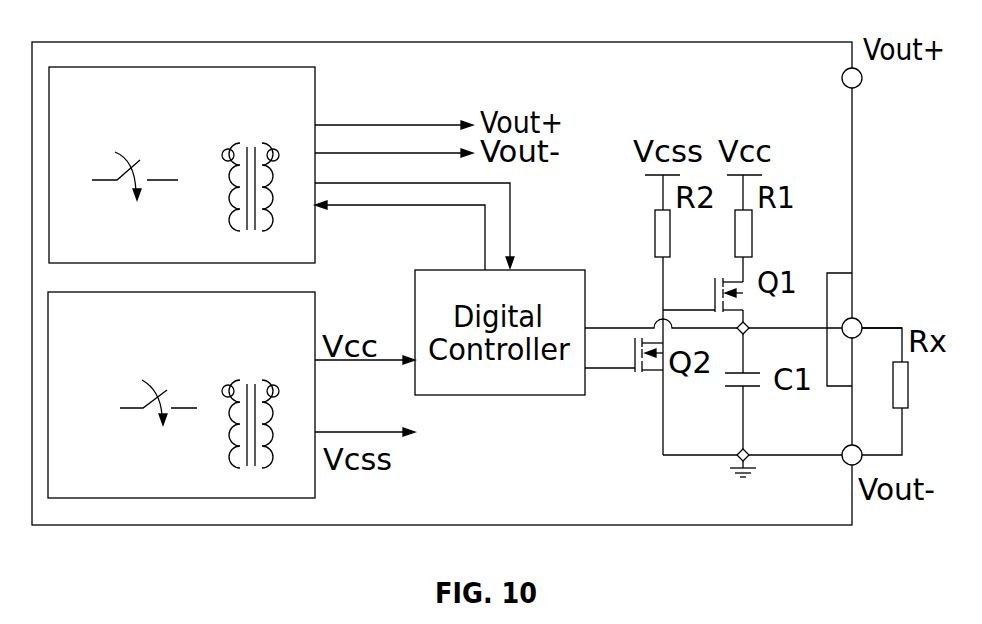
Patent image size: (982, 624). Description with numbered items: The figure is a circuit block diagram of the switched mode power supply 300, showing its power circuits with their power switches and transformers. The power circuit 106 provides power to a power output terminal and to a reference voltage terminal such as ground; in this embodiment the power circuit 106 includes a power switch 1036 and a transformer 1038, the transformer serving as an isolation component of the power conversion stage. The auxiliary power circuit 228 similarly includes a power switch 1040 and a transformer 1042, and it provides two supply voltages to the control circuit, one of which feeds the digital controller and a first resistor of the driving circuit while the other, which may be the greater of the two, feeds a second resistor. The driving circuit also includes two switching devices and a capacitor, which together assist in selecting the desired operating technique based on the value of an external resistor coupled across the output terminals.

The switched mode power supply 300 is at (100, 40).
The power circuit 106 is at (217, 66).
The power switch 1036 is at (158, 150).
The transformer 1038 is at (213, 212).
The auxiliary power circuit 228 is at (208, 500).
The power switch 1040 is at (158, 438).
The transformer 1042 is at (212, 424).